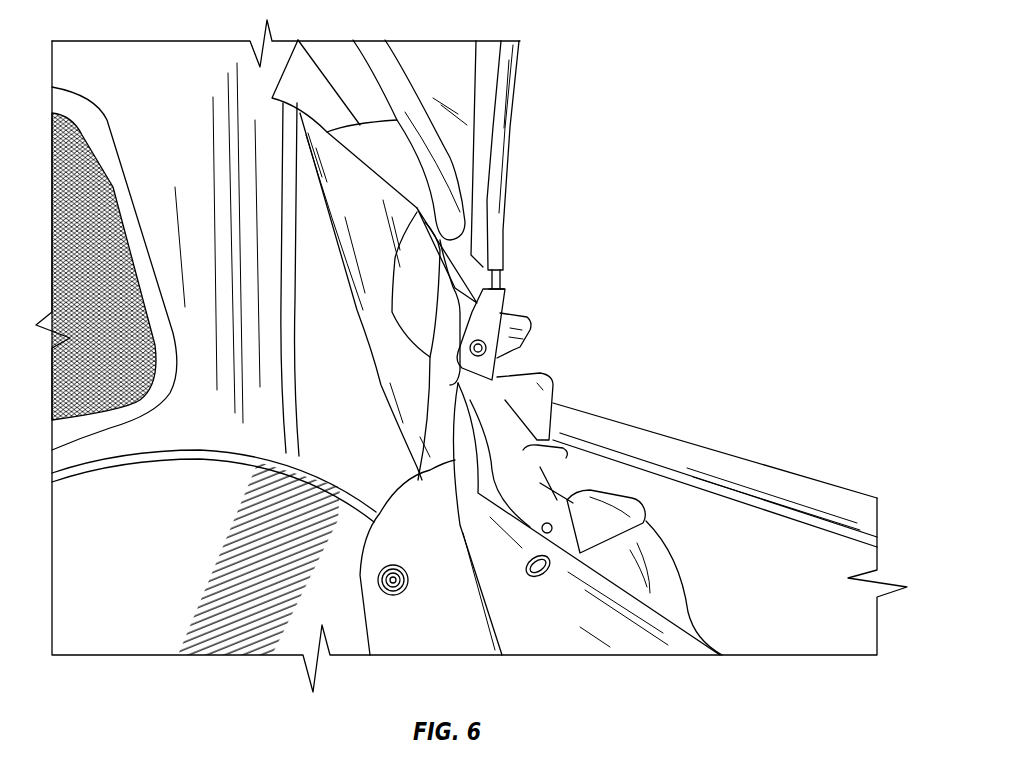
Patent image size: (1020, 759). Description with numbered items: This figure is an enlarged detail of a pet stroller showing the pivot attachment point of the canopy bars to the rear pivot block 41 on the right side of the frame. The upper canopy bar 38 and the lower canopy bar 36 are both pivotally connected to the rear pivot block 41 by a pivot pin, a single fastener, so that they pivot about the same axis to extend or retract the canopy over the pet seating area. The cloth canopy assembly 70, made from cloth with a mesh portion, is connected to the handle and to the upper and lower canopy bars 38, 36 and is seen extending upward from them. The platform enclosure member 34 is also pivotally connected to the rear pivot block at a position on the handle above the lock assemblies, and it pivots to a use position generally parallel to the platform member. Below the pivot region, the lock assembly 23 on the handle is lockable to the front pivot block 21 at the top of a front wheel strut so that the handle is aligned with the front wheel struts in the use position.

The cloth canopy assembly 70 is at (515, 113).
The lower canopy bar 36 is at (500, 278).
The upper canopy bar 38 is at (510, 312).
The rear pivot block 41 is at (508, 353).
The platform enclosure member 34 is at (677, 450).
The lock assembly 23 is at (562, 483).
The front pivot block 21 is at (655, 570).